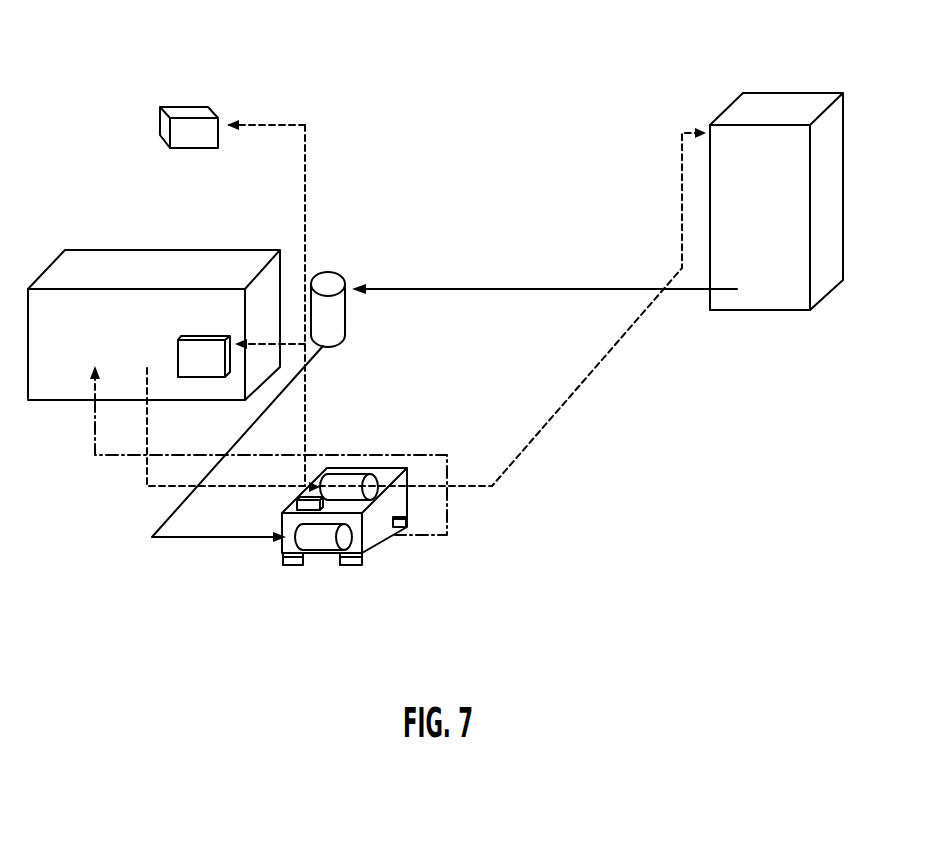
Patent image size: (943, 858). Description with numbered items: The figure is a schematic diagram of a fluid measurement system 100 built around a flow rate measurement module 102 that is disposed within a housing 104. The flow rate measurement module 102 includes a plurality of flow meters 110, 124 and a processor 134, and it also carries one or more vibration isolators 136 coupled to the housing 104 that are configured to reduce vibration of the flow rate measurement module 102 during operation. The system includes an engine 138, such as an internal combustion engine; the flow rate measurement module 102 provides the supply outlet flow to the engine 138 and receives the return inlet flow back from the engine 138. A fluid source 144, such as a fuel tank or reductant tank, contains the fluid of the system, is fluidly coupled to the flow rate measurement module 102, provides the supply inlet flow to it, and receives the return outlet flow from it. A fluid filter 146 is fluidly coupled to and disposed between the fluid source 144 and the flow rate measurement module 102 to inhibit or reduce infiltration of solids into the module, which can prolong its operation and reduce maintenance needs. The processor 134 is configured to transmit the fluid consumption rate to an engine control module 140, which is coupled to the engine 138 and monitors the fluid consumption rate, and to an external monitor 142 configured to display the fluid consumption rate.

The fluid measurement system 100 is at (160, 19).
The flow rate measurement module 102 is at (447, 581).
The housing 104 is at (284, 520).
The flow meter 110 is at (307, 539).
The flow meter 124 is at (353, 478).
The processor 134 is at (297, 503).
The vibration isolators 136 is at (398, 525).
The engine 138 is at (110, 267).
The engine control module 140 is at (203, 353).
The external monitor 142 is at (207, 118).
The fluid source 144 is at (737, 136).
The fluid filter 146 is at (330, 279).